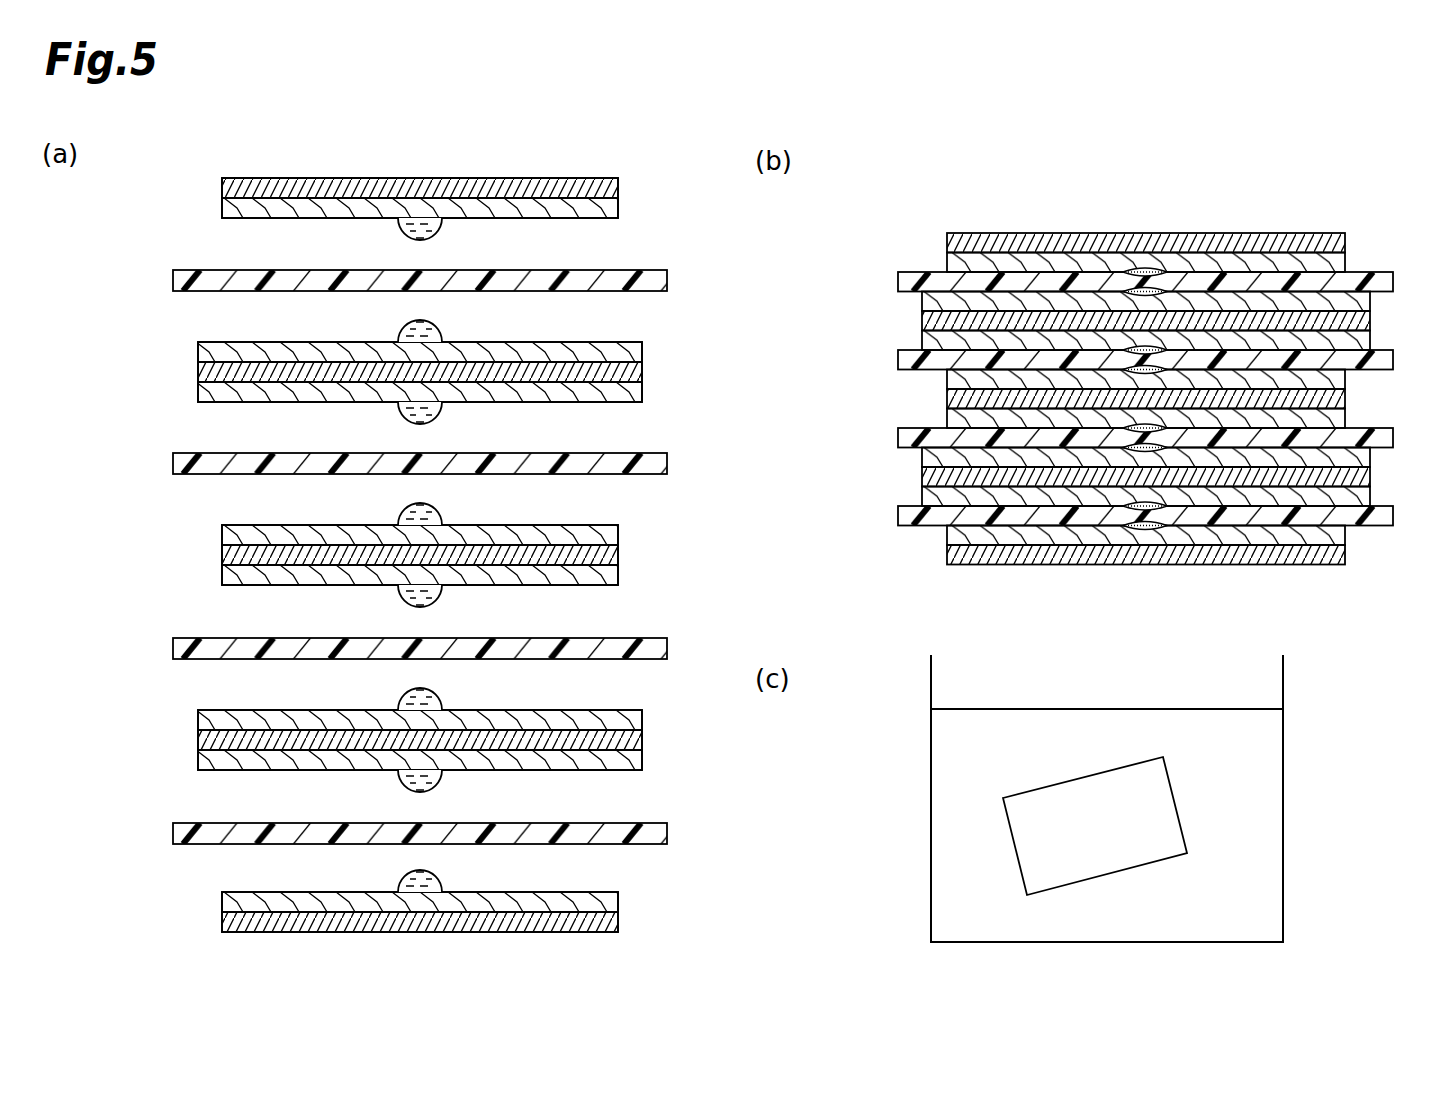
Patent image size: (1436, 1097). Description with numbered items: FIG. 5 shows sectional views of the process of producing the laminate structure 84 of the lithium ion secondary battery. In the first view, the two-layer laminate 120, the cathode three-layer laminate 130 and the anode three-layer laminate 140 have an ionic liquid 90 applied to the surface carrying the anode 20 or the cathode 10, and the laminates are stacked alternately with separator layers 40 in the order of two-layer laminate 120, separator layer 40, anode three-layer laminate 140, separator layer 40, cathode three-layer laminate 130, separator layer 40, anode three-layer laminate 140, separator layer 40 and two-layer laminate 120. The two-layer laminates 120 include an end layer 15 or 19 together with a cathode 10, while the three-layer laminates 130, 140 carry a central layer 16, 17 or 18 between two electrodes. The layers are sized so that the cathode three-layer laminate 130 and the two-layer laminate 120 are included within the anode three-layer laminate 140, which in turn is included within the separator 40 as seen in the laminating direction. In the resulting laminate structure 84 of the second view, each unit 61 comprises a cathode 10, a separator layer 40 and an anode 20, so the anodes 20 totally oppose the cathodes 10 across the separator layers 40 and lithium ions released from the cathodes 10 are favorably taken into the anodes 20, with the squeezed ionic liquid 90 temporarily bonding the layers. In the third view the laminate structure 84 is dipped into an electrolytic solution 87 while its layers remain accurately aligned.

The cathode 10 is at (230, 208).
The end plate / current collector layer 15 is at (230, 190).
The intermediate separator plate 16 is at (206, 372).
The intermediate separator plate 17 is at (230, 555).
The intermediate separator plate 18 is at (206, 740).
The end plate / current collector layer 19 is at (230, 922).
The anode 20 is at (206, 352).
The separator layer 40 is at (182, 281).
The unit cell 61 is at (839, 253).
The laminate structure 84 is at (1293, 207).
The electrolytic solution 87 is at (941, 905).
The ionic liquid 90 is at (430, 233).
The two-layer laminate 120 is at (137, 172).
The cathode three-layer laminate 130 is at (137, 520).
The anode three-layer laminate 140 is at (137, 337).